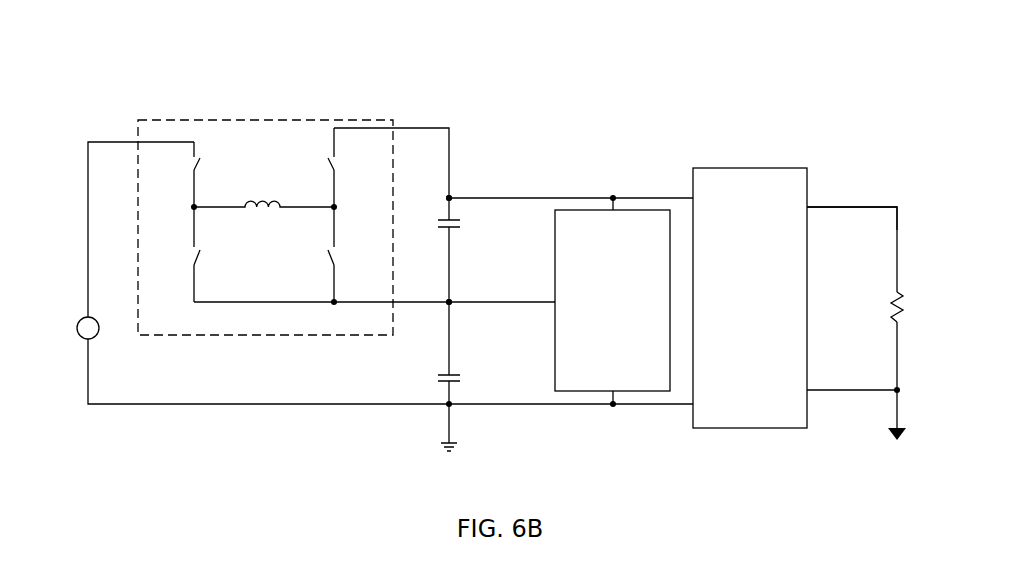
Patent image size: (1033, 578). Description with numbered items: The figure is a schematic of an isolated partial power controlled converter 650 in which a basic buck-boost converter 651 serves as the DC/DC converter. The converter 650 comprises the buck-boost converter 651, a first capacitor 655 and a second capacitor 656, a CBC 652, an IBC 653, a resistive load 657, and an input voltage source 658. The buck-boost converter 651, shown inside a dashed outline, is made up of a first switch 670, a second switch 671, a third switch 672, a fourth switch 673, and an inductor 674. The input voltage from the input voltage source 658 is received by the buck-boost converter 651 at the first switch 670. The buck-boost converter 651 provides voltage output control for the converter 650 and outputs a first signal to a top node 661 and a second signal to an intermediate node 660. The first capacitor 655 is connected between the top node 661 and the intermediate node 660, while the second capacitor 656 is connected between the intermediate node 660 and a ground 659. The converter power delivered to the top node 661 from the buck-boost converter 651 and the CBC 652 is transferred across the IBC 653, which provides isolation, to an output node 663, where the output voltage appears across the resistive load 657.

The isolated partial power controlled converter 650 is at (121, 89).
The buck-boost converter 651 is at (333, 120).
The CBC 652 is at (620, 210).
The IBC 653 is at (755, 168).
The first capacitor 655 is at (457, 235).
The second capacitor 656 is at (455, 387).
The resistive load 657 is at (907, 312).
The input voltage source 658 is at (79, 337).
The ground 659 is at (447, 442).
The intermediate node 660 is at (452, 303).
The top node 661 is at (452, 195).
The output node 663 is at (900, 203).
The first switch 670 is at (190, 168).
The second switch 671 is at (190, 262).
The third switch 672 is at (330, 163).
The fourth switch 673 is at (330, 258).
The inductor 674 is at (267, 213).